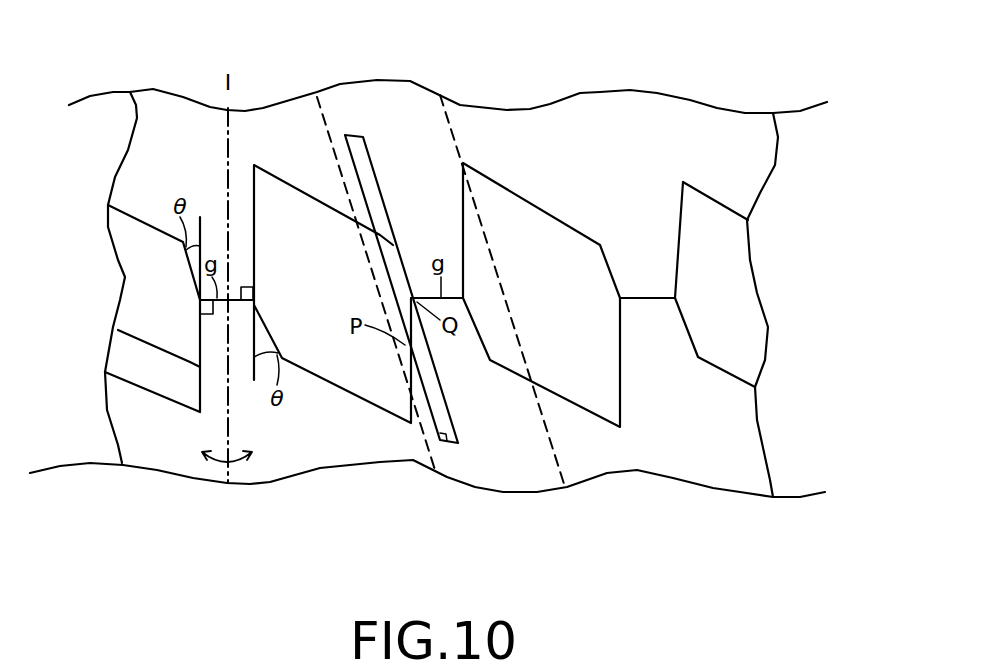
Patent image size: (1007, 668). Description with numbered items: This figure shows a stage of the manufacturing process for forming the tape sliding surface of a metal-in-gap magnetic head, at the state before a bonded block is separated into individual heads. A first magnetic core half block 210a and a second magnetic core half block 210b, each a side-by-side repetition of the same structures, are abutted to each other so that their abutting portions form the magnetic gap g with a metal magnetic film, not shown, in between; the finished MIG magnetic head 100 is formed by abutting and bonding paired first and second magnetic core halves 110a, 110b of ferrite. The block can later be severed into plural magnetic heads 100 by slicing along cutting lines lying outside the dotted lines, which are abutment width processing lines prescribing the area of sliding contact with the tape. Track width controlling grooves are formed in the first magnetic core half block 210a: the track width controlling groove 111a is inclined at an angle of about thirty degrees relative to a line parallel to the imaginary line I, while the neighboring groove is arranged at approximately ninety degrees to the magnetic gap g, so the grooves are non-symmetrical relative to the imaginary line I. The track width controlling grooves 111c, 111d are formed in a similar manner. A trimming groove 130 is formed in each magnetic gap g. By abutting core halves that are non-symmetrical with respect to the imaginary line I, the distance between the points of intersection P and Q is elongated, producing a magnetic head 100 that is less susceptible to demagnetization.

The MIG type magnetic head 100 is at (533, 480).
The first magnetic core half 110a is at (502, 470).
The second magnetic core half 110b is at (398, 112).
The track width controlling groove 111a is at (267, 323).
The track width controlling groove 111c is at (397, 263).
The track width controlling groove 111d is at (462, 210).
The trimming groove 130 is at (448, 447).
The first magnetic core half block 210a is at (677, 447).
The second magnetic core half block 210b is at (633, 140).